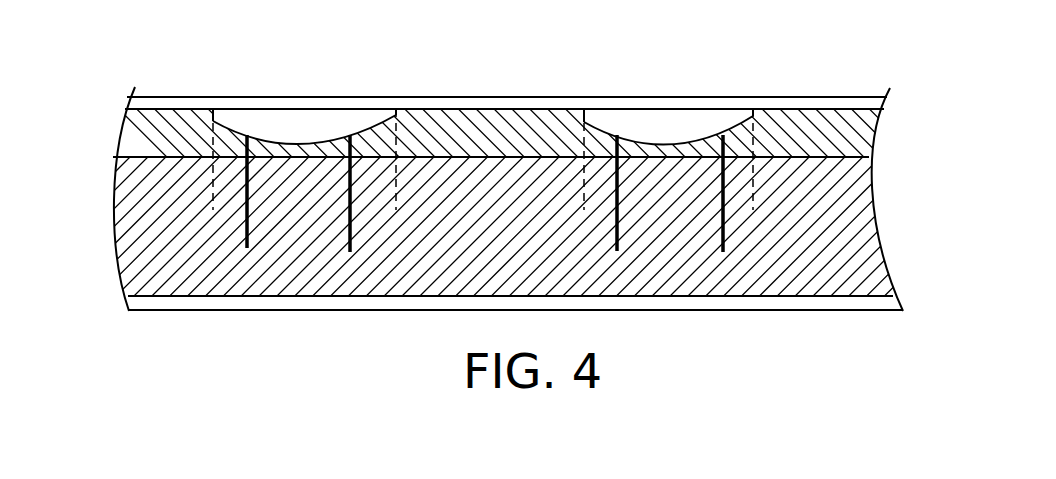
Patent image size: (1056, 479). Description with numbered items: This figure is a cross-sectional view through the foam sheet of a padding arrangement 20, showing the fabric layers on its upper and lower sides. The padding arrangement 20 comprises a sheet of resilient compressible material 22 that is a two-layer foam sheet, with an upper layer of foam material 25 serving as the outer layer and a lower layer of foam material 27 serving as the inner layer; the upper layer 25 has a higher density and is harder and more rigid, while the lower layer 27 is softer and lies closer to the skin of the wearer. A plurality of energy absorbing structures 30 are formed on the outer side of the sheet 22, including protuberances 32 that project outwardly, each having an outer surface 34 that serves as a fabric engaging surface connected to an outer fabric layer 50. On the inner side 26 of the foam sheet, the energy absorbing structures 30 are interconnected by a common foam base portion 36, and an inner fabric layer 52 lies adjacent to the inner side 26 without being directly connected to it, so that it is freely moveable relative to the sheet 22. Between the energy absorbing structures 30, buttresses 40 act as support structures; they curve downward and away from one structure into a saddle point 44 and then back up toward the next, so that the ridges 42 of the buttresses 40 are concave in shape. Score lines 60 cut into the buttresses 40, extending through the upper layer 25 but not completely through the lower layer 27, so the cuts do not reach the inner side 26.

The padding arrangement 20 is at (944, 81).
The sheet of resilient compressible material 22 is at (868, 223).
The upper layer of foam material 25 is at (807, 122).
The inner side 26 is at (324, 308).
The lower layer of foam material 27 is at (801, 249).
The energy absorbing structures 30 is at (528, 197).
The protuberances 32 is at (530, 97).
The outer surface 34 is at (159, 97).
The common foam base portion 36 is at (502, 259).
The buttresses 40 is at (483, 109).
The ridges 42 is at (302, 143).
The saddle point 44 is at (315, 143).
The outer fabric layer 50 is at (362, 100).
The inner fabric layer 52 is at (682, 302).
The score lines 60 is at (247, 248).